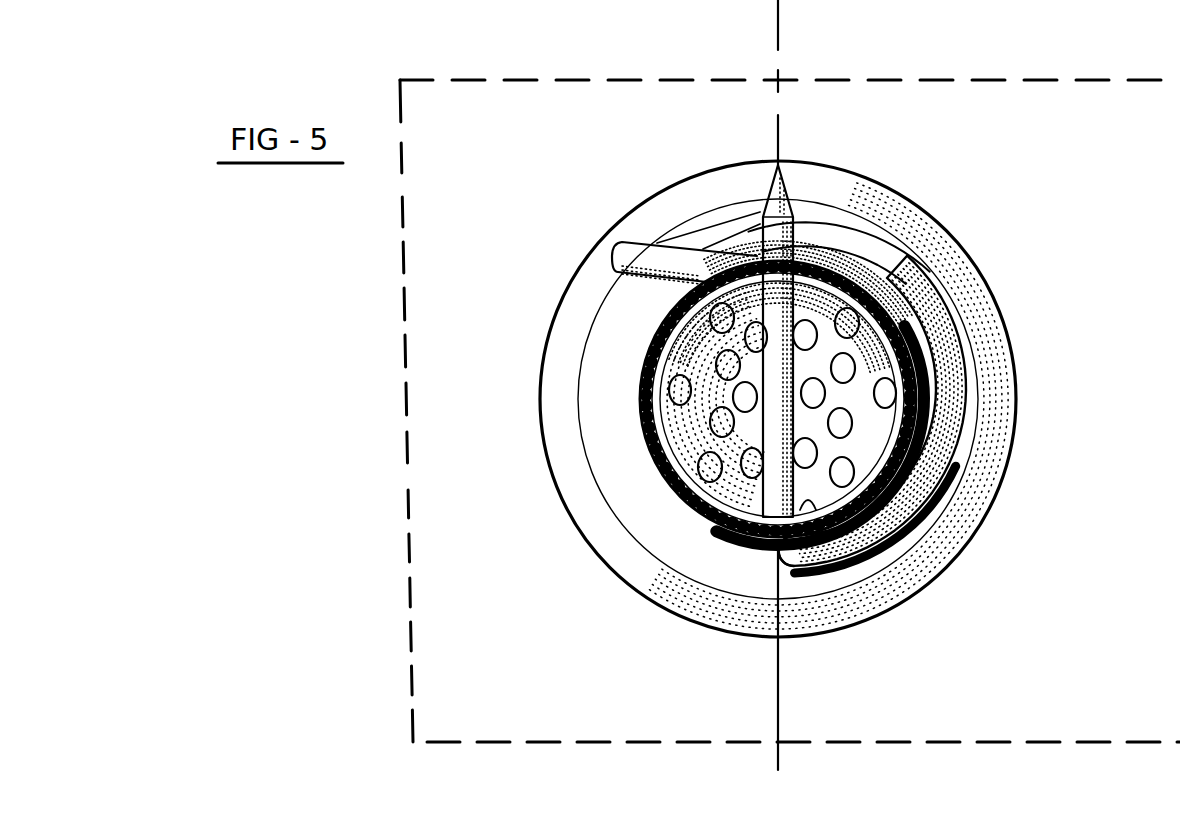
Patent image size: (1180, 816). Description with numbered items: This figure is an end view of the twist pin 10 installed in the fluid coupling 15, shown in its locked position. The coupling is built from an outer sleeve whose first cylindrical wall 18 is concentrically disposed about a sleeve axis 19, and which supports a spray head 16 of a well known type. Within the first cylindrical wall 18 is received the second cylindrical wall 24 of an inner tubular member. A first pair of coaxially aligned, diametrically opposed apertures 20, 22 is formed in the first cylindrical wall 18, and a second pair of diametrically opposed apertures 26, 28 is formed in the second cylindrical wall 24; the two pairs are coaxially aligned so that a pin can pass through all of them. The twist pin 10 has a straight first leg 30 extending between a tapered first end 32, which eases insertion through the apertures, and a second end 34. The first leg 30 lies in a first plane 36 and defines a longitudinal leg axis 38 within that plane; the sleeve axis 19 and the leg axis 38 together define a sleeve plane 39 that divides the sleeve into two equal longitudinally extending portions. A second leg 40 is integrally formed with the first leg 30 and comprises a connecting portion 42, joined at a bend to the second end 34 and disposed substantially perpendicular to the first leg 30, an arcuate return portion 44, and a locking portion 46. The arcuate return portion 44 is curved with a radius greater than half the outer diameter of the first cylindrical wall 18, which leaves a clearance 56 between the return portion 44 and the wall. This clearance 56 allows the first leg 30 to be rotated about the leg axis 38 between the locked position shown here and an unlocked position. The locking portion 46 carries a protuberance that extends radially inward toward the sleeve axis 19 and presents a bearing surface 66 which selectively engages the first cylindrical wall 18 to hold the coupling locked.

The twist pin 10 is at (985, 243).
The fluid coupling 15 is at (1025, 589).
The spray head 16 is at (824, 399).
The first cylindrical wall 18 is at (698, 399).
The sleeve axis 19 is at (775, 398).
The aperture 20 is at (839, 201).
The aperture 22 is at (686, 583).
The second cylindrical wall 24 is at (682, 399).
The aperture 26 is at (861, 211).
The aperture 28 is at (832, 605).
The first leg 30 is at (723, 445).
The first end 32 is at (803, 300).
The second end 34 is at (726, 617).
The first plane 36 is at (790, 378).
The longitudinal leg axis 38 is at (780, 15).
The sleeve plane 39 is at (729, 671).
The second leg 40 is at (934, 414).
The connecting portion 42 is at (867, 595).
The arcuate return portion 44 is at (826, 399).
The locking portion 46 is at (657, 236).
The clearance 56 is at (884, 393).
The bearing surface 66 is at (698, 203).